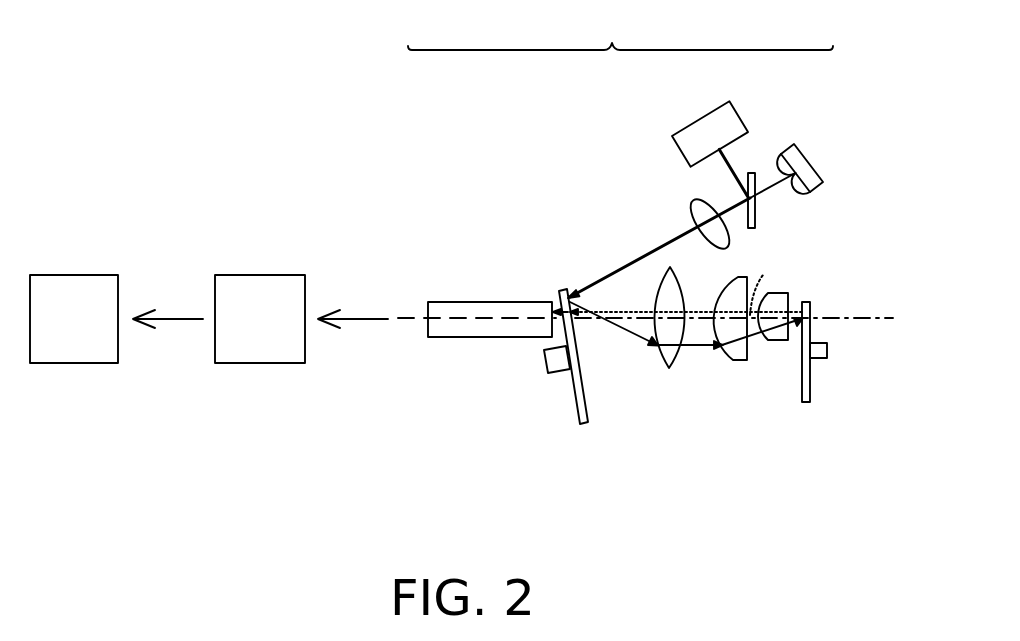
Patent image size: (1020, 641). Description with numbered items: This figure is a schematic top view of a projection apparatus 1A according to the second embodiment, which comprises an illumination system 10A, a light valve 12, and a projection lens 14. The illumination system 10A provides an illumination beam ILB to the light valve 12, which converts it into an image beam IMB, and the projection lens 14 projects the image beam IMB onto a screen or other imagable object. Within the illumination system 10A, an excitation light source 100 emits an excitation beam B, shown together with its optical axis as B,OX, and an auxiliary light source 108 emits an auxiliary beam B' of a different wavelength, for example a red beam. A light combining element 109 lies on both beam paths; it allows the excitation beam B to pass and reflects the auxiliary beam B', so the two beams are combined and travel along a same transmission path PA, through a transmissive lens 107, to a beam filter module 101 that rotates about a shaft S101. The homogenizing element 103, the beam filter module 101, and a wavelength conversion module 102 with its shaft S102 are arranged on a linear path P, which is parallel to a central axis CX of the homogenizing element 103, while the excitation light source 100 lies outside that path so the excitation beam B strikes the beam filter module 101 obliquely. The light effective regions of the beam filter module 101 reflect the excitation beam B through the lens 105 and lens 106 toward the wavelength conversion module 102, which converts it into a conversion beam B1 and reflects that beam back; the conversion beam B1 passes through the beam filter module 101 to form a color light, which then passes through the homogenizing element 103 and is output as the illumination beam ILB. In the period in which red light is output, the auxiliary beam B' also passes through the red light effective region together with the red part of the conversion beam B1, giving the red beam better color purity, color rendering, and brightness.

The illumination system 10A is at (620, 29).
The excitation light source 100 is at (806, 158).
The beam filter module 101 is at (585, 426).
The wavelength conversion module 102 is at (805, 403).
The homogenizing element 103 is at (488, 308).
The lens 105 is at (668, 362).
The lens 106 is at (726, 352).
The lens 107 is at (782, 340).
The auxiliary light source 108 is at (696, 126).
The light combining element 109 is at (755, 217).
The shaft S101 is at (545, 366).
The shaft S102 is at (826, 355).
The light valve 12 is at (272, 332).
The projection lens 14 is at (88, 332).
The projection apparatus 1A is at (917, 520).
The transmission path PA is at (647, 254).
The excitation beam B is at (678, 341).
The conversion beam B1 is at (762, 278).
The auxiliary beam B' is at (755, 135).
The excitation beam and optical axis B,OX is at (783, 193).
The linear path P is at (883, 318).
The central axis CX is at (413, 318).
The image beam IMB is at (180, 319).
The illumination beam ILB is at (363, 319).